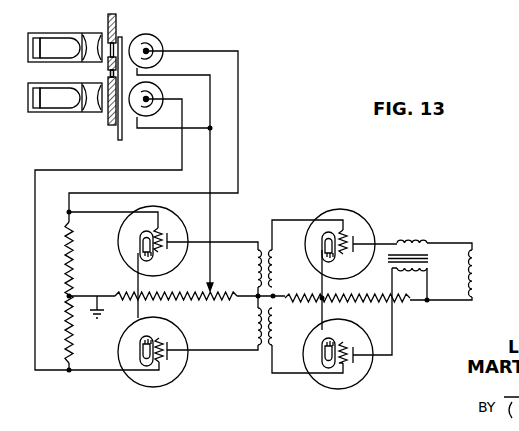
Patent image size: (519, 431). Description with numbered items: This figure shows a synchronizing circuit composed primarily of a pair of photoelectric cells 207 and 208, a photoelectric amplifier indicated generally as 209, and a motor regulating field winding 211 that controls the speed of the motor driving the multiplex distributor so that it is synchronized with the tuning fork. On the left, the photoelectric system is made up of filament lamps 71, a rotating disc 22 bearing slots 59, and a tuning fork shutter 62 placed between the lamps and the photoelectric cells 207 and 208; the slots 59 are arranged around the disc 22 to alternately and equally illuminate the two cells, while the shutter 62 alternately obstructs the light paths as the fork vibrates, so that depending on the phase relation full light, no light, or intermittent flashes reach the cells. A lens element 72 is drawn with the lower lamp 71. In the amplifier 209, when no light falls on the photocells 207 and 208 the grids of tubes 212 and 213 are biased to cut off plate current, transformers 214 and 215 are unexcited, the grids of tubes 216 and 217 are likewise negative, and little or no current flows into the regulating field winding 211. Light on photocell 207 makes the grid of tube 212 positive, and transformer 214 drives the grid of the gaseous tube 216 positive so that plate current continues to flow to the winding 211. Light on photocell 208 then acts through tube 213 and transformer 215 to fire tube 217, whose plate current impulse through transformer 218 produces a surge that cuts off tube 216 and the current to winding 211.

The rotating disc 22 is at (107, 25).
The slots 59 is at (113, 72).
The tuning fork shutter 62 is at (118, 135).
The filament lamps 71 is at (47, 40).
The lens 72 is at (93, 108).
The photoelectric cell 207 is at (158, 36).
The photoelectric cell 208 is at (163, 96).
The photoelectric amplifier 209 is at (230, 386).
The motor regulating field winding 211 is at (476, 257).
The tube 212 is at (121, 252).
The tube 213 is at (119, 347).
The transformer 214 is at (254, 258).
The transformer 215 is at (254, 319).
The tube 216 is at (366, 222).
The tube 217 is at (354, 385).
The transformer 218 is at (407, 246).